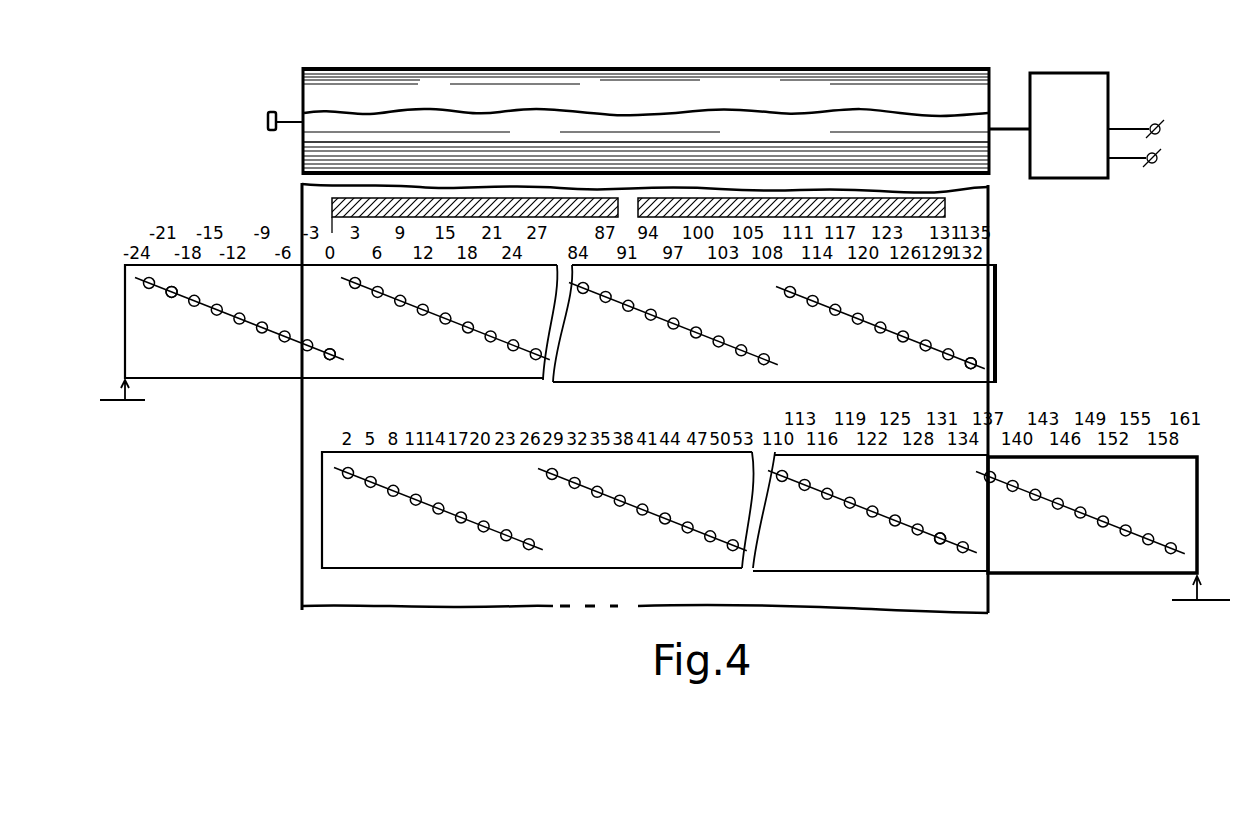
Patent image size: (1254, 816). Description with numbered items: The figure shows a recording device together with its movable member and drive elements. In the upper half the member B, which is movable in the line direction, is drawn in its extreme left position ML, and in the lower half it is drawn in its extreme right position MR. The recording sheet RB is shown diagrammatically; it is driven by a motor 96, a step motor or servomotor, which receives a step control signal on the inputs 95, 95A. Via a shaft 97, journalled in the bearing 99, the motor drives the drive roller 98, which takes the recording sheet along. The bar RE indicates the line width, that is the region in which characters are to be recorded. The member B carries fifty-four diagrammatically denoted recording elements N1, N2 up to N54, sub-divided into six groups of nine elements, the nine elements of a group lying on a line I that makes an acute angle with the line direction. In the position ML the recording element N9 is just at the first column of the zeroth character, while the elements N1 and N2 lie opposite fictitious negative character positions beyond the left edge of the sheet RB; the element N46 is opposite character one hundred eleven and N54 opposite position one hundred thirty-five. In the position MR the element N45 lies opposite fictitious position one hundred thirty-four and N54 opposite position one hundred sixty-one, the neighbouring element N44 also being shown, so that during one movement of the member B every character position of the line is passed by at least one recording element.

The input 95 is at (1153, 159).
The input 95A is at (1157, 130).
The motor 96 is at (1098, 102).
The shaft 97 is at (1003, 126).
The drive roller 98 is at (973, 143).
The bearing 99 is at (272, 131).
The bar RE is at (942, 214).
The member B is at (997, 292).
The extreme left position ML is at (328, 335).
The extreme right position MR is at (1202, 588).
The recording sheet RB is at (645, 600).
The recording element N1 is at (239, 316).
The recording element N2 is at (185, 287).
The recording element N9 is at (338, 344).
The line I is at (361, 367).
The recording element N44 is at (949, 521).
The recording element N45 is at (777, 418).
The recording element N46 is at (880, 321).
The recording element N54 is at (974, 350).